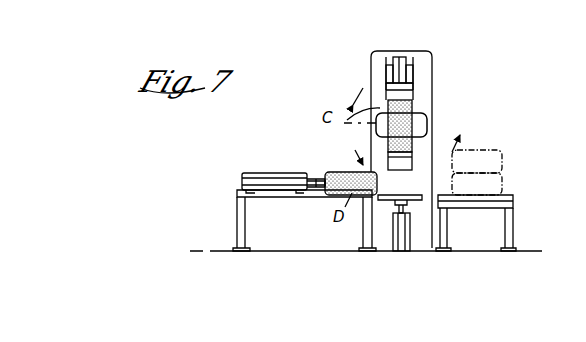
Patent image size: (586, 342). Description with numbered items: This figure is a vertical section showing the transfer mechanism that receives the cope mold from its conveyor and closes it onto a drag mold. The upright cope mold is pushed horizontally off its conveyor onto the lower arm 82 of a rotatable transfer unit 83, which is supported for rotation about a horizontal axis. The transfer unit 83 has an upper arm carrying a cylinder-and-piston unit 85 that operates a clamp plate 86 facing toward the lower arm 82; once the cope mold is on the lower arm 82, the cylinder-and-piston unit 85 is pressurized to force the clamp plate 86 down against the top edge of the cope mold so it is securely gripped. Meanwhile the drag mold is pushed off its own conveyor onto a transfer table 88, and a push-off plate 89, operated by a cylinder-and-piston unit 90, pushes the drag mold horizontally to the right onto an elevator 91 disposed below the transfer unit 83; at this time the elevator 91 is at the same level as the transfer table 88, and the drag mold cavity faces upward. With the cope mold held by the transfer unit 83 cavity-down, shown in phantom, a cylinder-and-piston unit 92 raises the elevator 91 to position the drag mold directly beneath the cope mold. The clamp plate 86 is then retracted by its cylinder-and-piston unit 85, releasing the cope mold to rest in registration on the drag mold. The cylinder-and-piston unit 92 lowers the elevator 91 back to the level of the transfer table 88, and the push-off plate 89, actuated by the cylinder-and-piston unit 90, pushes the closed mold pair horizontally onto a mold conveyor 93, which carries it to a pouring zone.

The lower arm 82 is at (371, 150).
The rotatable transfer unit 83 is at (440, 119).
The cylinder-and-piston unit 85 is at (400, 56).
The clamp plate 86 is at (412, 82).
The transfer table 88 is at (298, 198).
The push-off plate 89 is at (322, 176).
The cylinder-and-piston unit 90 is at (238, 175).
The elevator 91 is at (415, 198).
The cylinder-and-piston unit 92 is at (397, 241).
The mold conveyor 93 is at (510, 197).